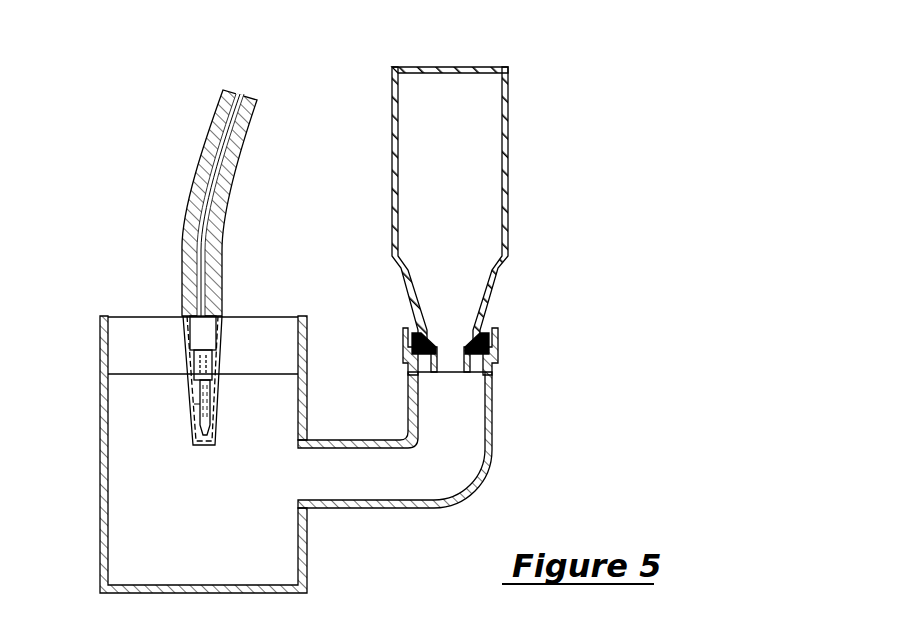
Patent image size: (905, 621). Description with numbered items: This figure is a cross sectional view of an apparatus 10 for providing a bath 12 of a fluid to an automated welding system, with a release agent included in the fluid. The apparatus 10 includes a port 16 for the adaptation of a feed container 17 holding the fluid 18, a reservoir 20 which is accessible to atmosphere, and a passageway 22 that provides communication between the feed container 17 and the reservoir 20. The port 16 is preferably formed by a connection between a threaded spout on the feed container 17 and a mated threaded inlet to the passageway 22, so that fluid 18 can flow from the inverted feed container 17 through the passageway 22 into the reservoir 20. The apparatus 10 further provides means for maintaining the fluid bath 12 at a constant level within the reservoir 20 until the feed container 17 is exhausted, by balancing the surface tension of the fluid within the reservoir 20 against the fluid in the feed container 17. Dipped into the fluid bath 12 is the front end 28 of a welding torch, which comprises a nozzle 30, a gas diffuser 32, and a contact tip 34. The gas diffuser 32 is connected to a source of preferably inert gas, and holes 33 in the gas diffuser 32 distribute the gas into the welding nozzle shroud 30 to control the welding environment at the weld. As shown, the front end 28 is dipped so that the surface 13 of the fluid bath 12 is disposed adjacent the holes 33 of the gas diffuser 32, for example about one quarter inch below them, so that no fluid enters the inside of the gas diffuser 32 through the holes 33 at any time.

The apparatus 10 is at (316, 450).
The fluid bath 12 is at (212, 537).
The surface of the fluid bath 13 is at (300, 358).
The port 16 is at (506, 345).
The feed container 17 is at (508, 117).
The fluid 18 is at (464, 186).
The reservoir 20 is at (100, 348).
The passageway 22 is at (414, 508).
The front end 28 is at (197, 293).
The nozzle 30 is at (216, 423).
The gas diffuser 32 is at (212, 368).
The holes 33 is at (192, 363).
The contact tip 34 is at (190, 408).